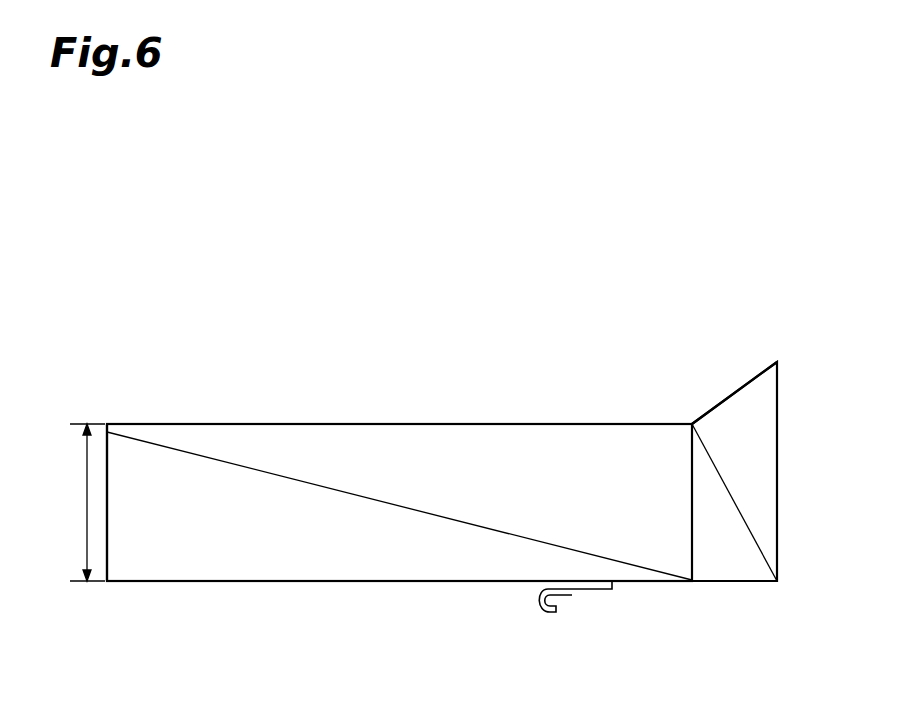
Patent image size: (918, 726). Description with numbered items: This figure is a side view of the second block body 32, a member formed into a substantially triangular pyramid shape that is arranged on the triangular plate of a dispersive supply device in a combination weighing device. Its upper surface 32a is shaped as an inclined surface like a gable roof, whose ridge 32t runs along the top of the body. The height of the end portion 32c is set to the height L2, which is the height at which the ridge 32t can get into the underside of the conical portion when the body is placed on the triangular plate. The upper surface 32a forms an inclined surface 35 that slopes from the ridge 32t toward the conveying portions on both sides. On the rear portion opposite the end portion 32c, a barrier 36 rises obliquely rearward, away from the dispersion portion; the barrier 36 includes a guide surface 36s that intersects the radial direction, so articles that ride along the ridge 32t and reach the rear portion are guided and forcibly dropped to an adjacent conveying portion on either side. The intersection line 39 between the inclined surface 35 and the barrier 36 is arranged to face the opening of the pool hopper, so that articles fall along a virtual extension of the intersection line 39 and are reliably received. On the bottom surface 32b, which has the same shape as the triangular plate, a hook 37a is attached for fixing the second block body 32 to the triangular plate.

The second block body 32 is at (595, 282).
The ridge 32t is at (313, 424).
The bottom surface 32b is at (340, 584).
The end portion 32c is at (145, 498).
The upper surface 32a is at (436, 457).
The inclined surface 35 is at (633, 455).
The barrier 36 is at (779, 427).
The guide surface 36s is at (731, 407).
The intersection line 39 is at (735, 498).
The hook 37a is at (590, 593).
The height L2 is at (81, 502).